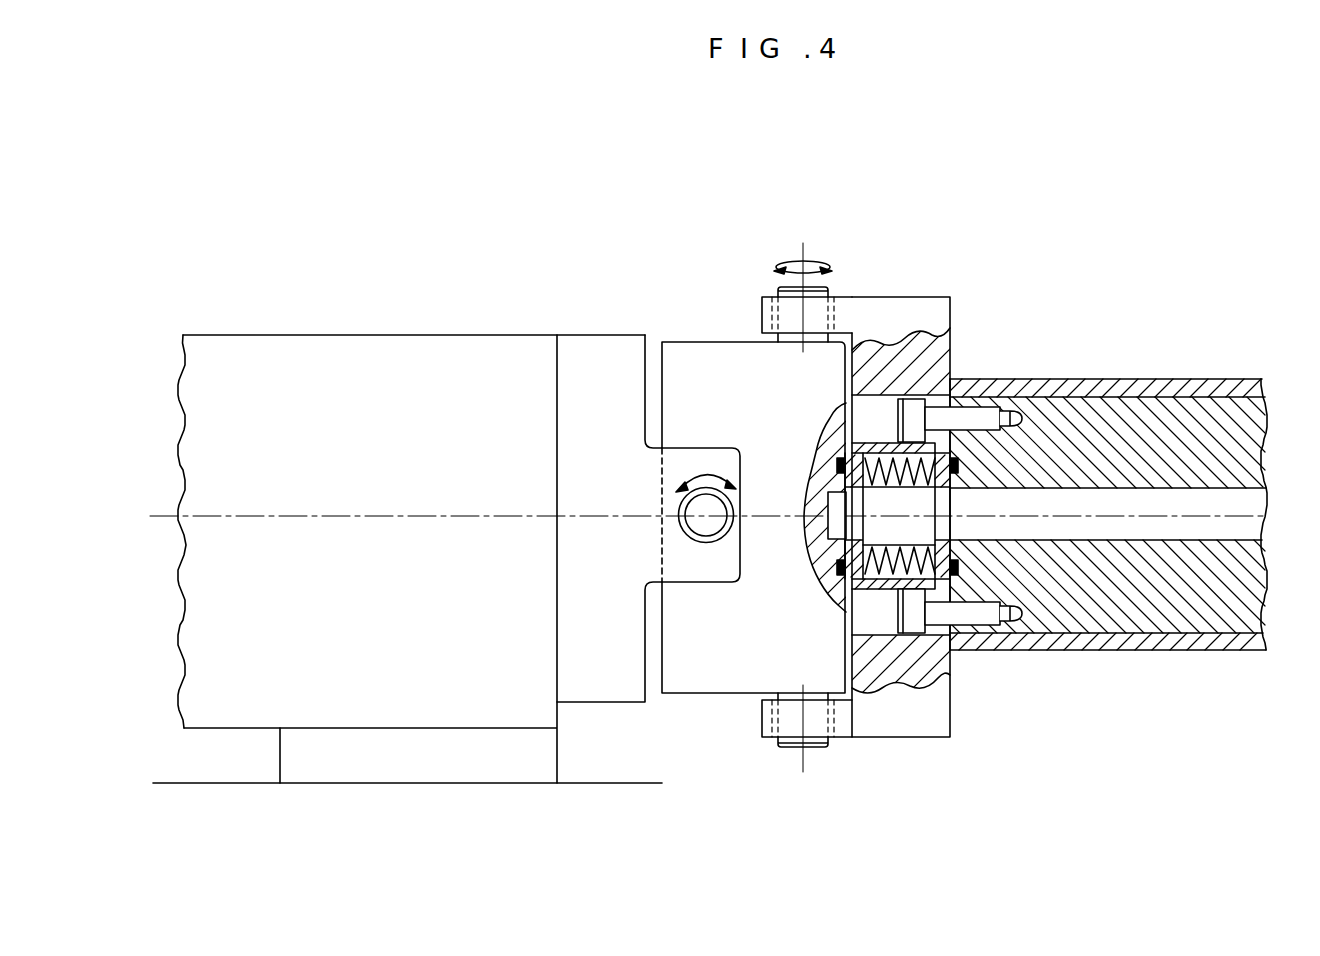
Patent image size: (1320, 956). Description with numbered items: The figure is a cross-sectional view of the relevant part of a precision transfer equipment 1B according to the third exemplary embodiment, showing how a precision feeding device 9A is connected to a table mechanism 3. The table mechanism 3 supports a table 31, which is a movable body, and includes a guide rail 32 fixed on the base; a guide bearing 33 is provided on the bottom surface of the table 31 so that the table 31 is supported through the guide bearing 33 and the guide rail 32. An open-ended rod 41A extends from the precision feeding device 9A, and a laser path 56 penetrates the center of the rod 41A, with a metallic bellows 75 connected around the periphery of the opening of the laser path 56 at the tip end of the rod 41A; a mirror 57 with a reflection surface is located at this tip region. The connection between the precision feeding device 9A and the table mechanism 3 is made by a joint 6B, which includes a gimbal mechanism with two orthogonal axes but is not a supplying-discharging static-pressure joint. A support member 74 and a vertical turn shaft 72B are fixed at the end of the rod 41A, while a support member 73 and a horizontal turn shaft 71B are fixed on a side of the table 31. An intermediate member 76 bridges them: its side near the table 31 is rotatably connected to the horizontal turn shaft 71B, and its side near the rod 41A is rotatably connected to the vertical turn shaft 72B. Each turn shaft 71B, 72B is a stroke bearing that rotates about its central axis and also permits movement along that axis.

The precision transfer equipment 1B is at (405, 146).
The table mechanism 3 is at (407, 508).
The table 31 is at (262, 334).
The guide rail 32 is at (228, 784).
The guide bearing 33 is at (338, 784).
The joint 6B is at (757, 449).
The support member 73 is at (603, 334).
The horizontal turn shaft 71B is at (683, 505).
The intermediate member 76 is at (704, 695).
The mirror 57 is at (832, 505).
The vertical turn shaft 72B is at (800, 749).
The support member 74 is at (915, 739).
The metallic bellows 75 is at (886, 450).
The precision feeding device 9A is at (1076, 388).
The rod 41A is at (1075, 379).
The laser path 56 is at (1196, 500).